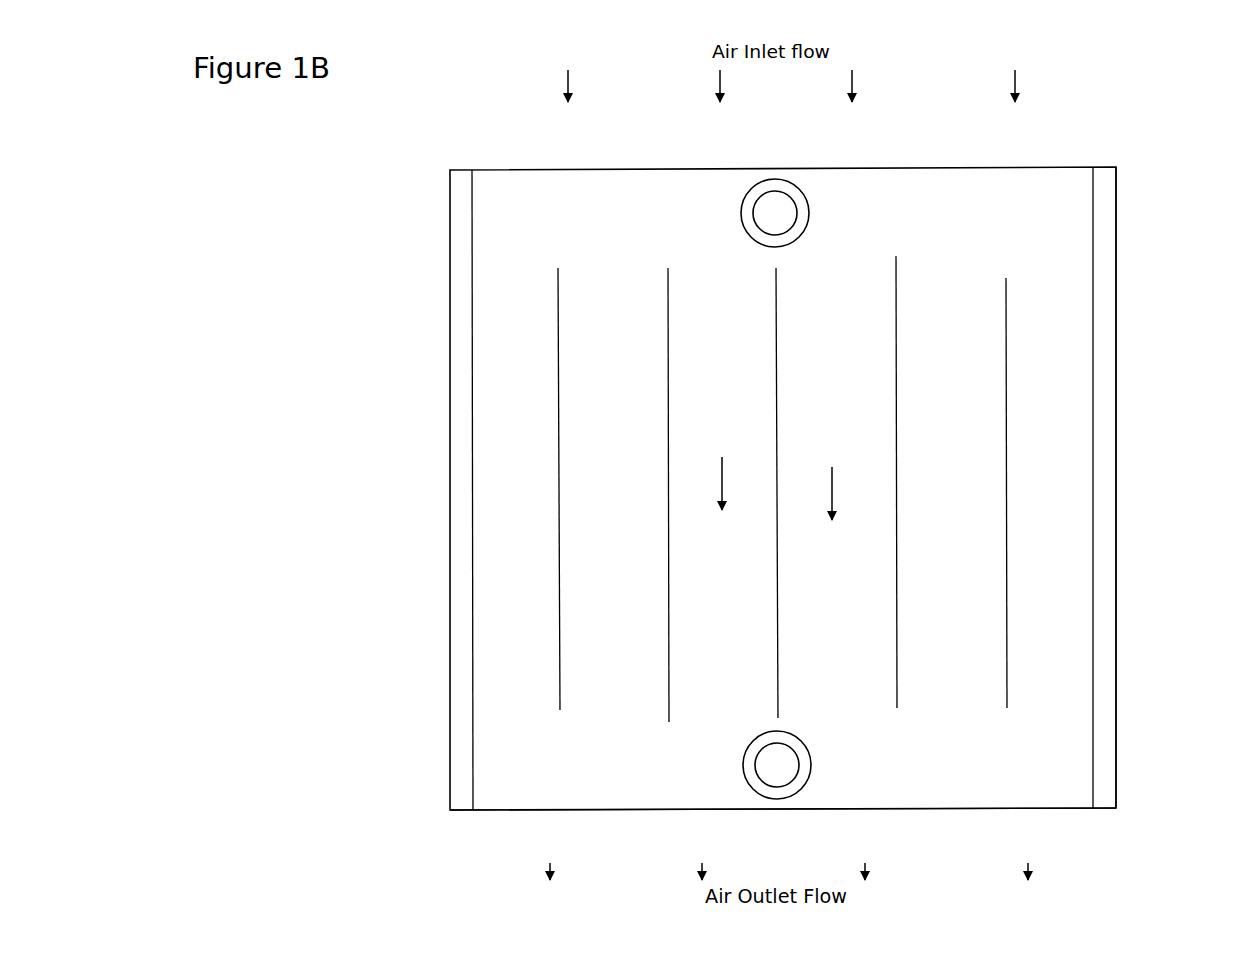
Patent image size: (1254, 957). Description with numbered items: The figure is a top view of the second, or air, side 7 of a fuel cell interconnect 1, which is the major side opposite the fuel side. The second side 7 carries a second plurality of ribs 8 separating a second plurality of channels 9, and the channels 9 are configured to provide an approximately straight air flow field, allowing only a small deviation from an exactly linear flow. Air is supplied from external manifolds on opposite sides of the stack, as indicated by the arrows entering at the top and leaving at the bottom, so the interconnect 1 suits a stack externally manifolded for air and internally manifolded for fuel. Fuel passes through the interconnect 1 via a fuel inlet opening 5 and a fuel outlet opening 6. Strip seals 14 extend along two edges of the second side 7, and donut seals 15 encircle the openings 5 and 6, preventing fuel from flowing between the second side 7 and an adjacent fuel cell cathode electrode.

The interconnect 1 is at (1150, 512).
The fuel inlet opening 5 is at (778, 773).
The fuel outlet opening 6 is at (777, 207).
The second side 7 is at (1058, 818).
The second plurality of ribs 8 is at (1008, 627).
The second plurality of channels 9 is at (1040, 665).
The strip seals 14 is at (1103, 402).
The donut seals 15 is at (773, 182).